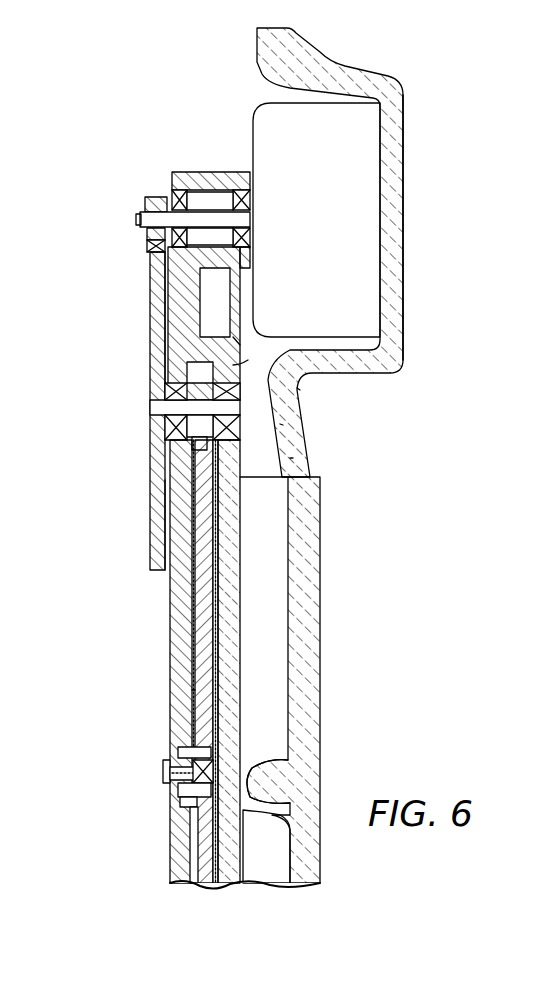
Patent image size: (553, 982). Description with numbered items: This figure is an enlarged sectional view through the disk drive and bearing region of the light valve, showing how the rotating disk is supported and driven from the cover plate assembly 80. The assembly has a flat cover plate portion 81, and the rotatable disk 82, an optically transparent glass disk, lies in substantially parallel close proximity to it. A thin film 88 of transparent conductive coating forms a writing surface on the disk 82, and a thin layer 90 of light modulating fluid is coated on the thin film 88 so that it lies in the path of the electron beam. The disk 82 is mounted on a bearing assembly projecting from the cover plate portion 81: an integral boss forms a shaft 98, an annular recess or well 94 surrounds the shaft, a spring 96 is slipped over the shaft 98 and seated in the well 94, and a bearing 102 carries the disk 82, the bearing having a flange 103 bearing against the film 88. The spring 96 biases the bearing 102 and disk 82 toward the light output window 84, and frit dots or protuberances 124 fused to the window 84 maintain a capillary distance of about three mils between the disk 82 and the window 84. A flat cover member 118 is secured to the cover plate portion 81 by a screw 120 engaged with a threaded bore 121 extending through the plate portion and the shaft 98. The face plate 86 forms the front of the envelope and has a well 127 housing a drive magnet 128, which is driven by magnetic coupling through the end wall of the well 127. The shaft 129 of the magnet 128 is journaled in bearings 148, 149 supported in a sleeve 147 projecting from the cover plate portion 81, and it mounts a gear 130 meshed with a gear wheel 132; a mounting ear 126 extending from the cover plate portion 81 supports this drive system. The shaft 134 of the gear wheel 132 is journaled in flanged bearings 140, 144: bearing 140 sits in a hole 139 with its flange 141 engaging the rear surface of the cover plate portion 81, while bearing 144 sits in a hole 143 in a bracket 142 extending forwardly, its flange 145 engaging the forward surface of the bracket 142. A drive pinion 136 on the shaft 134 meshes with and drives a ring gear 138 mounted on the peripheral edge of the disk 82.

The cover plate assembly 80 is at (172, 583).
The cover plate portion 81 is at (170, 533).
The rotatable disk 82 is at (195, 632).
The light output window 84 is at (237, 600).
The face plate 86 is at (262, 52).
The thin film 88 is at (213, 670).
The thin layer of light modulating fluid 90 is at (192, 690).
The annular recess or well 94 is at (180, 750).
The spring 96 is at (180, 803).
The shaft 98 is at (207, 777).
The bearing 102 is at (287, 790).
The flange 103 is at (266, 846).
The flat cover member 118 is at (170, 790).
The screw 120 is at (163, 771).
The threaded bore 121 is at (190, 813).
The frit dots or protuberances 124 is at (217, 522).
The mounting ear 126 is at (180, 276).
The well 127 is at (400, 370).
The drive magnet 128 is at (302, 230).
The shaft 129 is at (140, 216).
The gear 130 is at (155, 197).
The gear wheel 132 is at (150, 343).
The shaft 134 is at (150, 410).
The drive pinion 136 is at (233, 365).
The ring gear 138 is at (165, 463).
The hole 139 is at (165, 440).
The flanged bearing 140 is at (165, 390).
The flange 141 is at (165, 365).
The bracket 142 is at (227, 347).
The hole 143 is at (293, 458).
The flanged bearing 144 is at (300, 390).
The flange 145 is at (283, 420).
The sleeve 147 is at (200, 172).
The bearing 148 is at (168, 197).
The bearing 149 is at (250, 200).